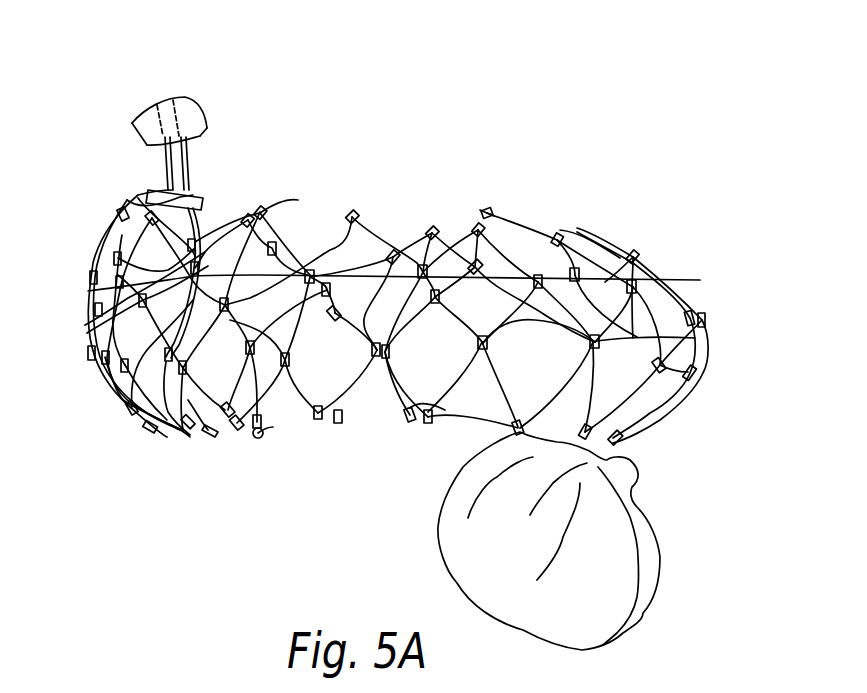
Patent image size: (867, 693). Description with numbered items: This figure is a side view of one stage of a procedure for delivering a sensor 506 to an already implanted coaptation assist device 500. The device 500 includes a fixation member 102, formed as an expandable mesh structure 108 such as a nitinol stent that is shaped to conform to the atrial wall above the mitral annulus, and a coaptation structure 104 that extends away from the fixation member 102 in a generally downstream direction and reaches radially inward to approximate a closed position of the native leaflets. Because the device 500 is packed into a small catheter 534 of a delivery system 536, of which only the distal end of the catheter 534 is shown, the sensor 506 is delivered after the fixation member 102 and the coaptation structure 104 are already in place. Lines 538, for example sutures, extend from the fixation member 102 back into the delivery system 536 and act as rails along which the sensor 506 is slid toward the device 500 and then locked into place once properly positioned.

The delivery system 536 is at (198, 77).
The catheter 534 is at (129, 133).
The lines 538 is at (193, 174).
The sensor 506 is at (203, 193).
The coaptation assist device 500 is at (616, 218).
The fixation member 102 is at (706, 304).
The coaptation structure 104 is at (405, 533).
The expandable mesh structure 108 is at (213, 400).